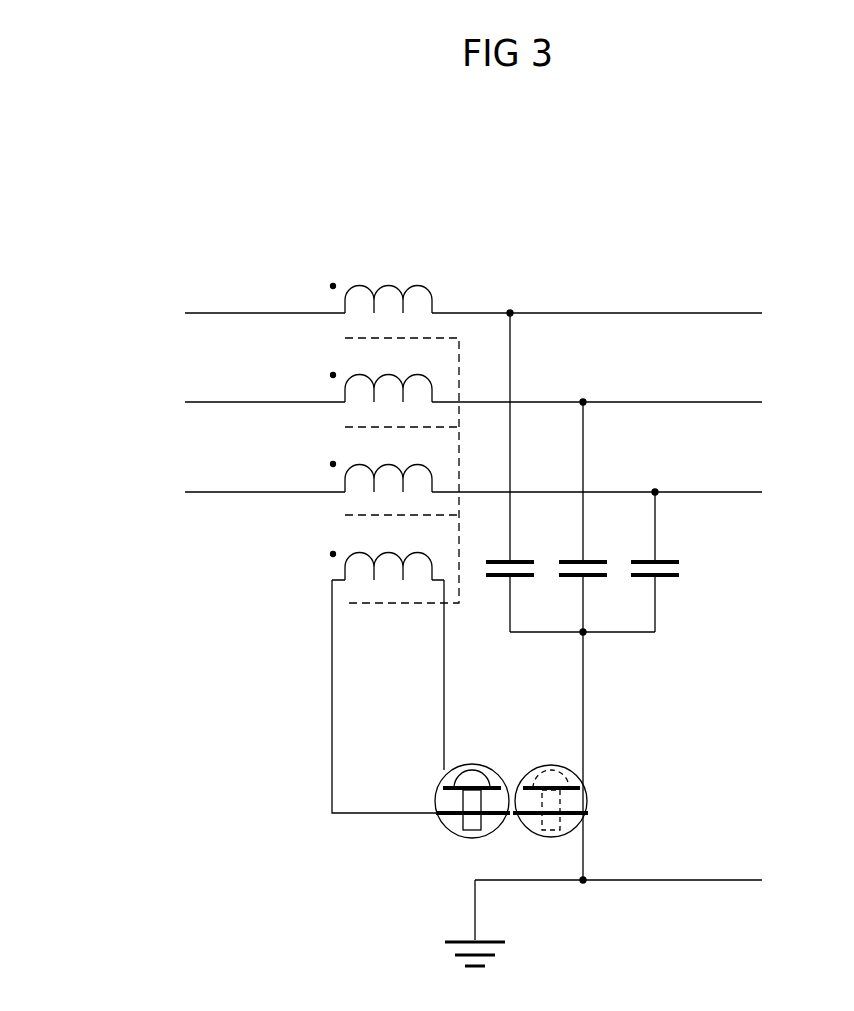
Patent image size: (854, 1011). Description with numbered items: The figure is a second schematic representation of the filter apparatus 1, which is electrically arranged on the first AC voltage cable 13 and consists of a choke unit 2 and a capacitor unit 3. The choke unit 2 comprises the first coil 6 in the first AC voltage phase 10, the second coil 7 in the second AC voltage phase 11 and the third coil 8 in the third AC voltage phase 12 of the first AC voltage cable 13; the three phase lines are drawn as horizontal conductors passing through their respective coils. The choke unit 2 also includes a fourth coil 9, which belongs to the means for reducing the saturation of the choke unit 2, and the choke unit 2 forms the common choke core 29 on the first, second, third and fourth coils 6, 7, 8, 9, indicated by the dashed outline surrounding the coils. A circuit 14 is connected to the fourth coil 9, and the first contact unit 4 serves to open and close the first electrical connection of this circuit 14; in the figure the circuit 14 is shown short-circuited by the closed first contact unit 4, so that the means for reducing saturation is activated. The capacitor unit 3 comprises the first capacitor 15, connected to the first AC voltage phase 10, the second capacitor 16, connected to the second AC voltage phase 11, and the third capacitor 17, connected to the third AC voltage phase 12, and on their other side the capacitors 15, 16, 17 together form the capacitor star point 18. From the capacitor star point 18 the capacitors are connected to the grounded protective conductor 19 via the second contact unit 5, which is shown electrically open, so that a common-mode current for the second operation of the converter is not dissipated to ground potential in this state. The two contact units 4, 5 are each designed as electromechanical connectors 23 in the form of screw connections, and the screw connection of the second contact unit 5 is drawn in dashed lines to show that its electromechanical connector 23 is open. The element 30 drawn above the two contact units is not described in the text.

The filter apparatus 1 is at (626, 172).
The choke unit 2 is at (357, 268).
The capacitor unit 3 is at (558, 292).
The first contact unit 4 is at (446, 825).
The second contact unit 5 is at (587, 800).
The first coil 6 is at (415, 285).
The second coil 7 is at (365, 372).
The third coil 8 is at (365, 462).
The fourth coil 9 is at (365, 552).
The first AC voltage phase 10 is at (206, 313).
The second AC voltage phase 11 is at (206, 402).
The third AC voltage phase 12 is at (206, 492).
The first AC voltage cable 13 is at (423, 388).
The circuit 14 is at (332, 688).
The first capacitor 15 is at (522, 560).
The second capacitor 16 is at (594, 560).
The third capacitor 17 is at (667, 560).
The capacitor star point 18 is at (585, 634).
The grounded protective conductor 19 is at (683, 882).
The electromechanical connector 23 is at (504, 725).
The common choke core 29 is at (462, 368).
The switch actuators 30 is at (552, 768).